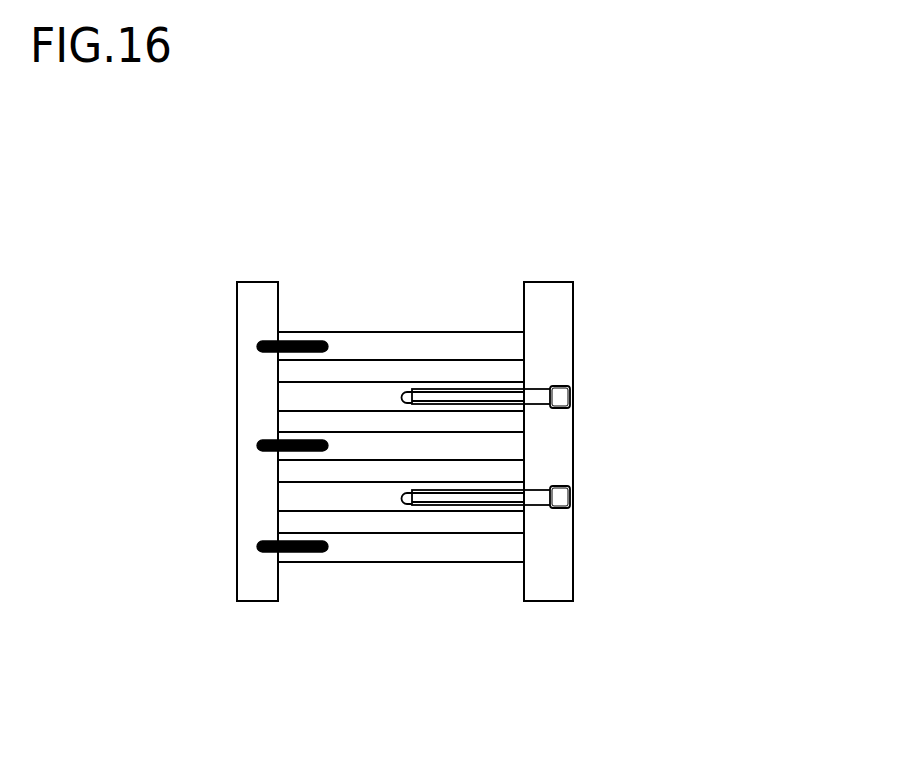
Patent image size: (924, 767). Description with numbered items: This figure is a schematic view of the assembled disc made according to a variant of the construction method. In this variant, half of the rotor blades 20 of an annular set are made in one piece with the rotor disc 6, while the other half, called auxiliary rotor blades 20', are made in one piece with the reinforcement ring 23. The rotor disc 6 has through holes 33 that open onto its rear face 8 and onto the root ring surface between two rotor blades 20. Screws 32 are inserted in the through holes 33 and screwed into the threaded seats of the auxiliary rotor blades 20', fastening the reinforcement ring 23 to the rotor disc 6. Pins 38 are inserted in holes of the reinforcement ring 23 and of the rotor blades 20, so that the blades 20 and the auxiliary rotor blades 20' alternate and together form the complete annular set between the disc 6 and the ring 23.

The rotor disc 6 is at (552, 278).
The rear face 8 is at (575, 553).
The rotor blades 20 is at (497, 387).
The auxiliary rotor blades 20' is at (381, 412).
The reinforcement ring 23 is at (235, 607).
The screws 32 is at (455, 388).
The through holes 33 is at (538, 397).
The pins 38 is at (300, 343).